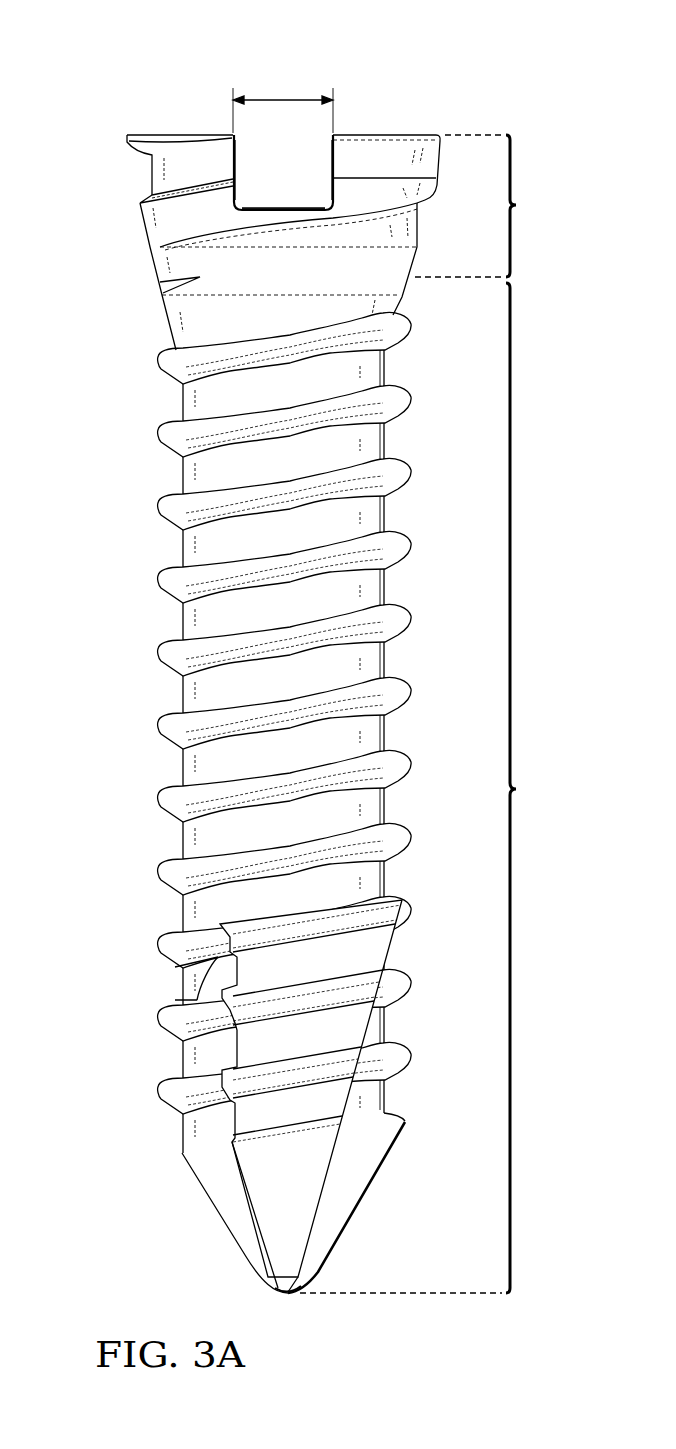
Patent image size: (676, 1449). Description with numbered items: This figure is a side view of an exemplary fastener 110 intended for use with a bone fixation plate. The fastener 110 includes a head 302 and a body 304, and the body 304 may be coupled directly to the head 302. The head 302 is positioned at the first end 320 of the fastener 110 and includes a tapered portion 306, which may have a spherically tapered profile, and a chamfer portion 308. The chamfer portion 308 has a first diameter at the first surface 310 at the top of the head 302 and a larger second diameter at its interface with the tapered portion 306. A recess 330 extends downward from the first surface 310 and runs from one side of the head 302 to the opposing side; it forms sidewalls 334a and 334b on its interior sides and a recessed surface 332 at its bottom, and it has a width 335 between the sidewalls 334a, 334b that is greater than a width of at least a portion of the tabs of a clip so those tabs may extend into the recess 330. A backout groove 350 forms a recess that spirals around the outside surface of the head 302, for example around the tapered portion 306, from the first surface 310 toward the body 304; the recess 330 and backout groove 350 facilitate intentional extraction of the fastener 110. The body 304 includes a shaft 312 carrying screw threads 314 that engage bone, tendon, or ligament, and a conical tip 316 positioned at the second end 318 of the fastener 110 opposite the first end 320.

The fastener 110 is at (99, 56).
The head 302 is at (492, 206).
The body 304 is at (435, 788).
The tapered portion 306 is at (145, 233).
The chamfer portion 308 is at (437, 133).
The first surface 310 is at (197, 133).
The shaft 312 is at (388, 438).
The screw threads 314 is at (407, 545).
The tip 316 is at (218, 1218).
The second end 318 is at (288, 1308).
The first end 320 is at (402, 115).
The recess 330 is at (316, 200).
The recessed surface 332 is at (262, 200).
The sidewall 334a is at (235, 154).
The sidewall 334b is at (330, 148).
The width 335 is at (289, 98).
The backout groove 350 is at (150, 173).